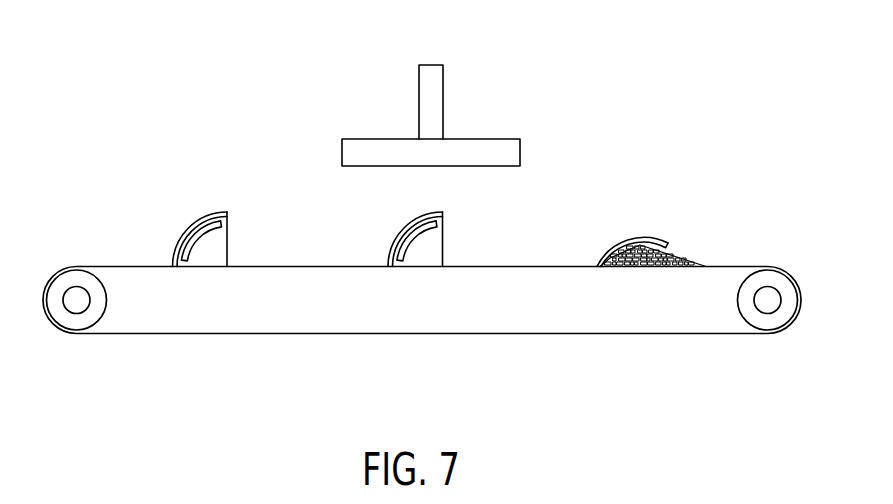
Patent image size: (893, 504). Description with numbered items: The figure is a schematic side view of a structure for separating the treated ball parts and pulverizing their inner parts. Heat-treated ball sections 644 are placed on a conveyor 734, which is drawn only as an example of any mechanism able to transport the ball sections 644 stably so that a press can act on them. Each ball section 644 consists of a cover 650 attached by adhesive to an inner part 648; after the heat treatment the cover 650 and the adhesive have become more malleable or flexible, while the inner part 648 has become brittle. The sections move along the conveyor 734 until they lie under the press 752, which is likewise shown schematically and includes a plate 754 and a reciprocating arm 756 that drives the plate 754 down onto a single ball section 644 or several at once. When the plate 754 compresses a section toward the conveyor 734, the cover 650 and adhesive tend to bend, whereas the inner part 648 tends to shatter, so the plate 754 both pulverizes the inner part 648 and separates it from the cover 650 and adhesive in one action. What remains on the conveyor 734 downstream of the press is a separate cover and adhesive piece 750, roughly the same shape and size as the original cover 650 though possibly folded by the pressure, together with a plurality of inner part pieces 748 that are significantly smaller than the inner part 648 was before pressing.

The conveyor 734 is at (190, 345).
The ball section 644 is at (202, 203).
The inner part 648 is at (227, 245).
The cover 650 is at (175, 252).
The cover and adhesive piece 750 is at (645, 237).
The inner part pieces 748 is at (708, 236).
The press 752 is at (470, 97).
The plate 754 is at (520, 155).
The reciprocating arm 756 is at (419, 108).